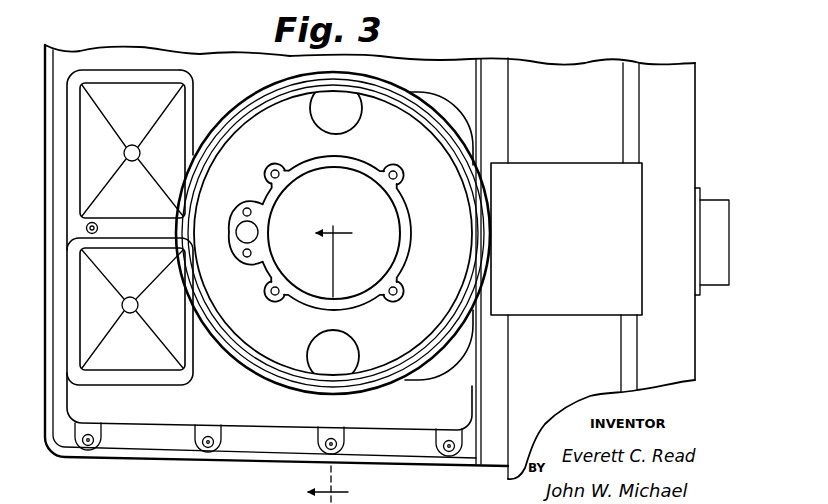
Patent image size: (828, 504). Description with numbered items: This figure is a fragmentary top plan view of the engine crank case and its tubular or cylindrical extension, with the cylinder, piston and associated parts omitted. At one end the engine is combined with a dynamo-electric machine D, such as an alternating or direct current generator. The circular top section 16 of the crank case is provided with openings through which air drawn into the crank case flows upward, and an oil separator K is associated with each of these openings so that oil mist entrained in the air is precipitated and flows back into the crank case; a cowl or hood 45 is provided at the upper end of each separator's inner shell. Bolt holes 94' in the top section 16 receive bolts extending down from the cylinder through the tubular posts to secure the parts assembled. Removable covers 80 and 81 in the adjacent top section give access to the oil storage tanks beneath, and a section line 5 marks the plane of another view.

The removable cover 80 is at (126, 95).
The removable cover 81 is at (135, 354).
The cowl or hood 45 is at (322, 110).
The oil separator K is at (353, 121).
The bolt holes 94' is at (360, 232).
The section of the top of the crank case 16 is at (333, 233).
The section line 5 is at (330, 356).
The dynamo-electric machine D is at (660, 145).